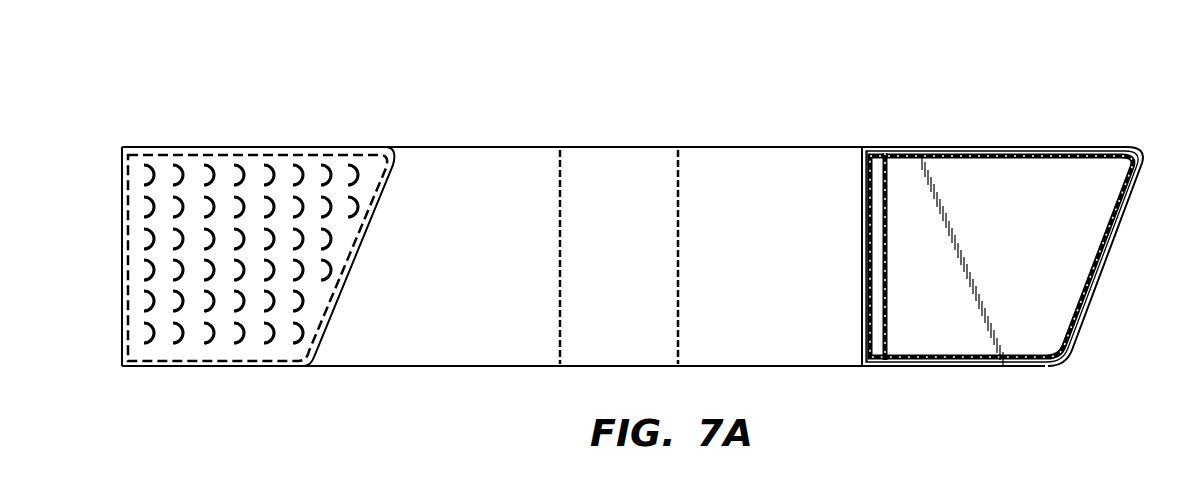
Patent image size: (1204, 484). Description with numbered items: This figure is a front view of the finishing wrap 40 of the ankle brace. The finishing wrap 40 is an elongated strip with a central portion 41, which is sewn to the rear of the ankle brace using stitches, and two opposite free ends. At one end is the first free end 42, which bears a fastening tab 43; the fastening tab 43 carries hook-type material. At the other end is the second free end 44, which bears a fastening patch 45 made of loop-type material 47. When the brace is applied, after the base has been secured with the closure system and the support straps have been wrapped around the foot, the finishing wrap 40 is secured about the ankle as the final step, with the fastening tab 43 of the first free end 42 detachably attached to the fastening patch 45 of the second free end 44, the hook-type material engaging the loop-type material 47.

The finishing wrap 40 is at (742, 178).
The central portion 41 is at (673, 170).
The first free end 42 is at (1031, 140).
The fastening tab 43 is at (1045, 300).
The second free end 44 is at (225, 148).
The fastening patch 45 is at (248, 215).
The loop-type material 47 is at (217, 330).